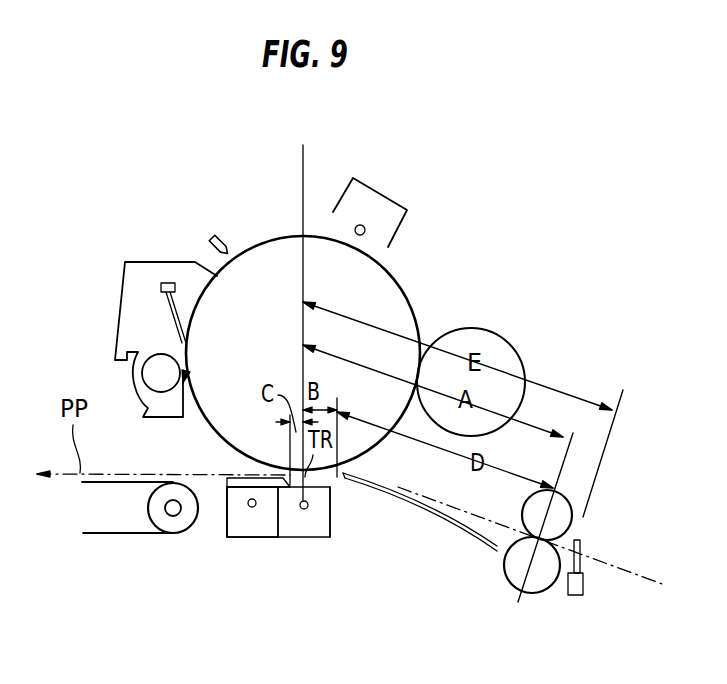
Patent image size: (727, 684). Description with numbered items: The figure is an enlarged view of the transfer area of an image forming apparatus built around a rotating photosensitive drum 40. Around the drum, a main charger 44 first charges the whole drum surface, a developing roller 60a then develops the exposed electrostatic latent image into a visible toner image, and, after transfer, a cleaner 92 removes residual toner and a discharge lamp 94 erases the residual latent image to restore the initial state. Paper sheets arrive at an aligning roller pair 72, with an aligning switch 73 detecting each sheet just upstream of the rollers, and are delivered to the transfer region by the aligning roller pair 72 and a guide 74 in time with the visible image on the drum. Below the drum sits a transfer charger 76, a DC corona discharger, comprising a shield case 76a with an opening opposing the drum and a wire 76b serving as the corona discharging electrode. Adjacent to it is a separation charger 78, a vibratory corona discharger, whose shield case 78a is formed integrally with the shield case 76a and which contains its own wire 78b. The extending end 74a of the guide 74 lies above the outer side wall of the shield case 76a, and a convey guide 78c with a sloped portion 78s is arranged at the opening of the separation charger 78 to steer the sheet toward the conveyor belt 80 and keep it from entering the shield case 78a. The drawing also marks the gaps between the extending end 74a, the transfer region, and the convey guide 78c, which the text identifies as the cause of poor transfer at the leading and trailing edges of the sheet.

The photosensitive drum 40 is at (265, 258).
The main charger 44 is at (378, 192).
The developing roller 60a is at (497, 340).
The aligning roller pair 72 is at (538, 585).
The aligning switch 73 is at (585, 594).
The guide 74 is at (427, 508).
The extending end 74a is at (345, 474).
The transfer charger 76 is at (313, 538).
The shield case 76a is at (331, 522).
The wire 76b is at (308, 506).
The separation charger 78 is at (250, 538).
The shield case 78a is at (232, 537).
The wire 78b is at (248, 505).
The convey guide 78c is at (232, 478).
The sloped portion 78s is at (282, 496).
The conveyor belt 80 is at (112, 534).
The cleaner 92 is at (133, 297).
The discharge lamp 94 is at (217, 232).